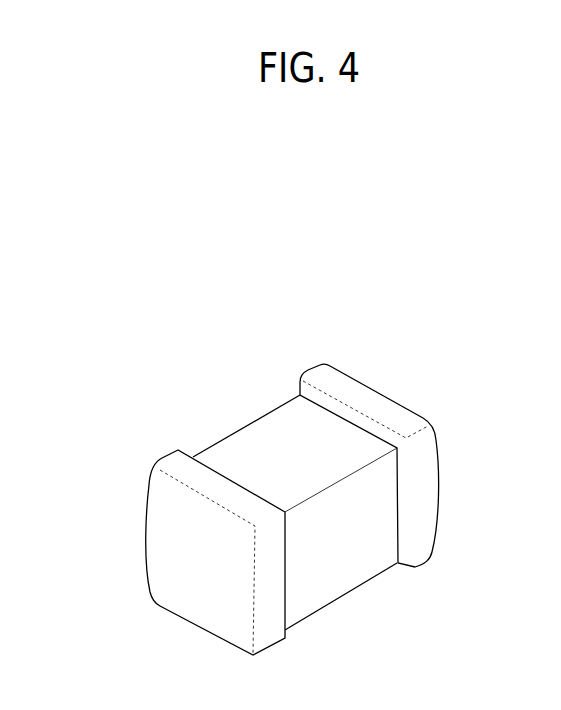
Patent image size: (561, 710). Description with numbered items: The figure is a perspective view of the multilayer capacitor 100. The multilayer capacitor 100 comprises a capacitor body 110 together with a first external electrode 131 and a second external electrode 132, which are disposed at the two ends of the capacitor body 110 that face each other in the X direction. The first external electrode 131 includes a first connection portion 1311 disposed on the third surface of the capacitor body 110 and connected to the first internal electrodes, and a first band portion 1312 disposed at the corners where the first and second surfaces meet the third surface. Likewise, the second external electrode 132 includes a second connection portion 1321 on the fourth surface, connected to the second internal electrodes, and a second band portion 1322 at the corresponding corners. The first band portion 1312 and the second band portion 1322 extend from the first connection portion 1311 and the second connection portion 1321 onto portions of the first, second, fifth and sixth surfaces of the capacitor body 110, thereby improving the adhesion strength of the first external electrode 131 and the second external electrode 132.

The multilayer capacitor 100 is at (256, 412).
The capacitor body 110 is at (228, 453).
The first external electrode 131 is at (77, 517).
The first connection portion 1311 is at (203, 567).
The first band portion 1312 is at (208, 494).
The second external electrode 132 is at (502, 328).
The second connection portion 1321 is at (415, 418).
The second band portion 1322 is at (378, 407).